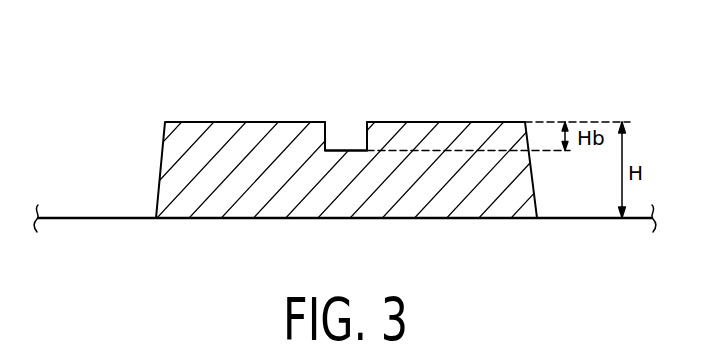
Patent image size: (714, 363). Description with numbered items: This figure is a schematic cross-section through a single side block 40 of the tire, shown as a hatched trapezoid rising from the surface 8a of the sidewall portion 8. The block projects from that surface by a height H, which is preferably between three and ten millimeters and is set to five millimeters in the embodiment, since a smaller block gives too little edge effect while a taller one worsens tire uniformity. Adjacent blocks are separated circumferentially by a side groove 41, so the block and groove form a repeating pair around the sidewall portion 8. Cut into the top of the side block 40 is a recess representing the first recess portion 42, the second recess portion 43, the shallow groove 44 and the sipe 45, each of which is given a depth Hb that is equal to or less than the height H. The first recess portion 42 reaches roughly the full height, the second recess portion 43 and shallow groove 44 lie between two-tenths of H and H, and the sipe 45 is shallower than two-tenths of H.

The sidewall portion 8 is at (562, 60).
The surface of the sidewall portion 8a is at (63, 218).
The side block 40 is at (195, 131).
The side groove 41 is at (122, 218).
The first recess portion 42 is at (345, 135).
The second recess portion 43 is at (345, 97).
The shallow groove 44 is at (346, 136).
The sipe 45 is at (346, 136).